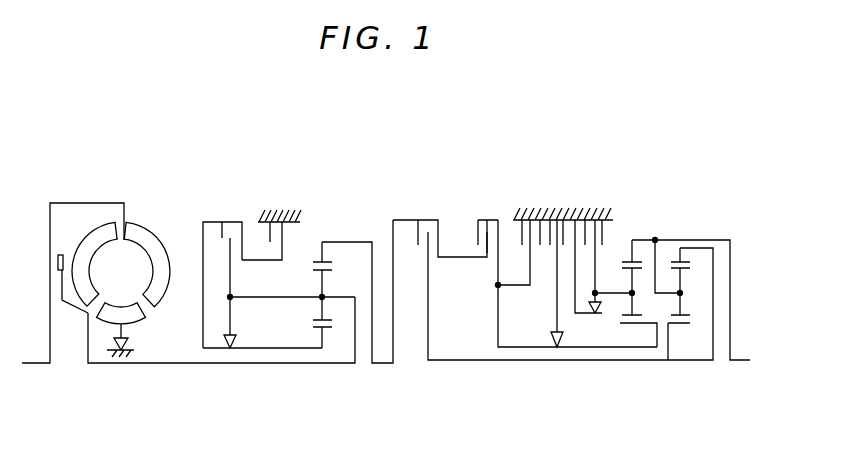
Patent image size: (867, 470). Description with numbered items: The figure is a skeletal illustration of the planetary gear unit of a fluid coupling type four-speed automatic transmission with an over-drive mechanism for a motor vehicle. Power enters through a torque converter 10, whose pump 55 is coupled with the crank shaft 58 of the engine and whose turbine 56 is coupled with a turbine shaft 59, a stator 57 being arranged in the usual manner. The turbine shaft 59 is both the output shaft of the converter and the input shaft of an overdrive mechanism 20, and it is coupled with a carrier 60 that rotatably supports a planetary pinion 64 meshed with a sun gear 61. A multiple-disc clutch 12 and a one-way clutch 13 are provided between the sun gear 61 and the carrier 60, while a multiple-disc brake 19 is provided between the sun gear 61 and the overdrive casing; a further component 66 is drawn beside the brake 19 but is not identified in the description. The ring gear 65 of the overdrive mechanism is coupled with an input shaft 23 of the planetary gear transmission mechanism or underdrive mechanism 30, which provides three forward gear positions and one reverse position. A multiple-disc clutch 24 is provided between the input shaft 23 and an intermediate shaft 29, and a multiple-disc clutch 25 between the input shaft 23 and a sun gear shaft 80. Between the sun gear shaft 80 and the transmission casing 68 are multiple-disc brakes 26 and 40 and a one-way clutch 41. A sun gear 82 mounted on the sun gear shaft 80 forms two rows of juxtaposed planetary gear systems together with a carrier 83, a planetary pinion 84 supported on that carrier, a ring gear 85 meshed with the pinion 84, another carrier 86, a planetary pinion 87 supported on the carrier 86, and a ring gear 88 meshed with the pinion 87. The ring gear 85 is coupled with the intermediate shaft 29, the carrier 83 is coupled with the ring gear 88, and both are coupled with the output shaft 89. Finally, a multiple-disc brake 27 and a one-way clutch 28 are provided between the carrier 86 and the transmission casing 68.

The torque converter 10 is at (123, 261).
The multiple-disc clutch 12 is at (231, 238).
The one-way clutch 13 is at (238, 340).
The multiple-disc brake 19 is at (290, 226).
The overdrive mechanism 20 is at (223, 214).
The input shaft 23 is at (385, 364).
The multiple-disc clutch 24 is at (415, 232).
The multiple-disc clutch 25 is at (524, 232).
The multiple-disc brake 26 is at (513, 228).
The multiple-disc brake 27 is at (604, 231).
The one-way clutch 28 is at (590, 312).
The intermediate shaft 29 is at (497, 362).
The planetary gear transmission mechanism 30 is at (484, 208).
The multiple-disc brake 40 is at (563, 232).
The one-way clutch 41 is at (567, 349).
The pump 55 is at (160, 259).
The turbine 56 is at (90, 246).
The stator 57 is at (130, 318).
The crank shaft 58 is at (42, 364).
The turbine shaft 59 is at (183, 364).
The carrier 60 is at (350, 297).
The sun gear 61 is at (323, 338).
The planetary pinion 64 is at (333, 272).
The ring gear 65 is at (313, 262).
The ground contact 66 is at (279, 210).
The transmission casing 68 is at (603, 217).
The sun gear shaft 80 is at (533, 349).
The sun gear 82 is at (667, 332).
The carrier 83 is at (658, 263).
The planetary pinion 84 is at (682, 272).
The ring gear 85 is at (682, 253).
The carrier 86 is at (610, 293).
The planetary pinion 87 is at (623, 310).
The ring gear 88 is at (637, 260).
The output shaft 89 is at (737, 362).